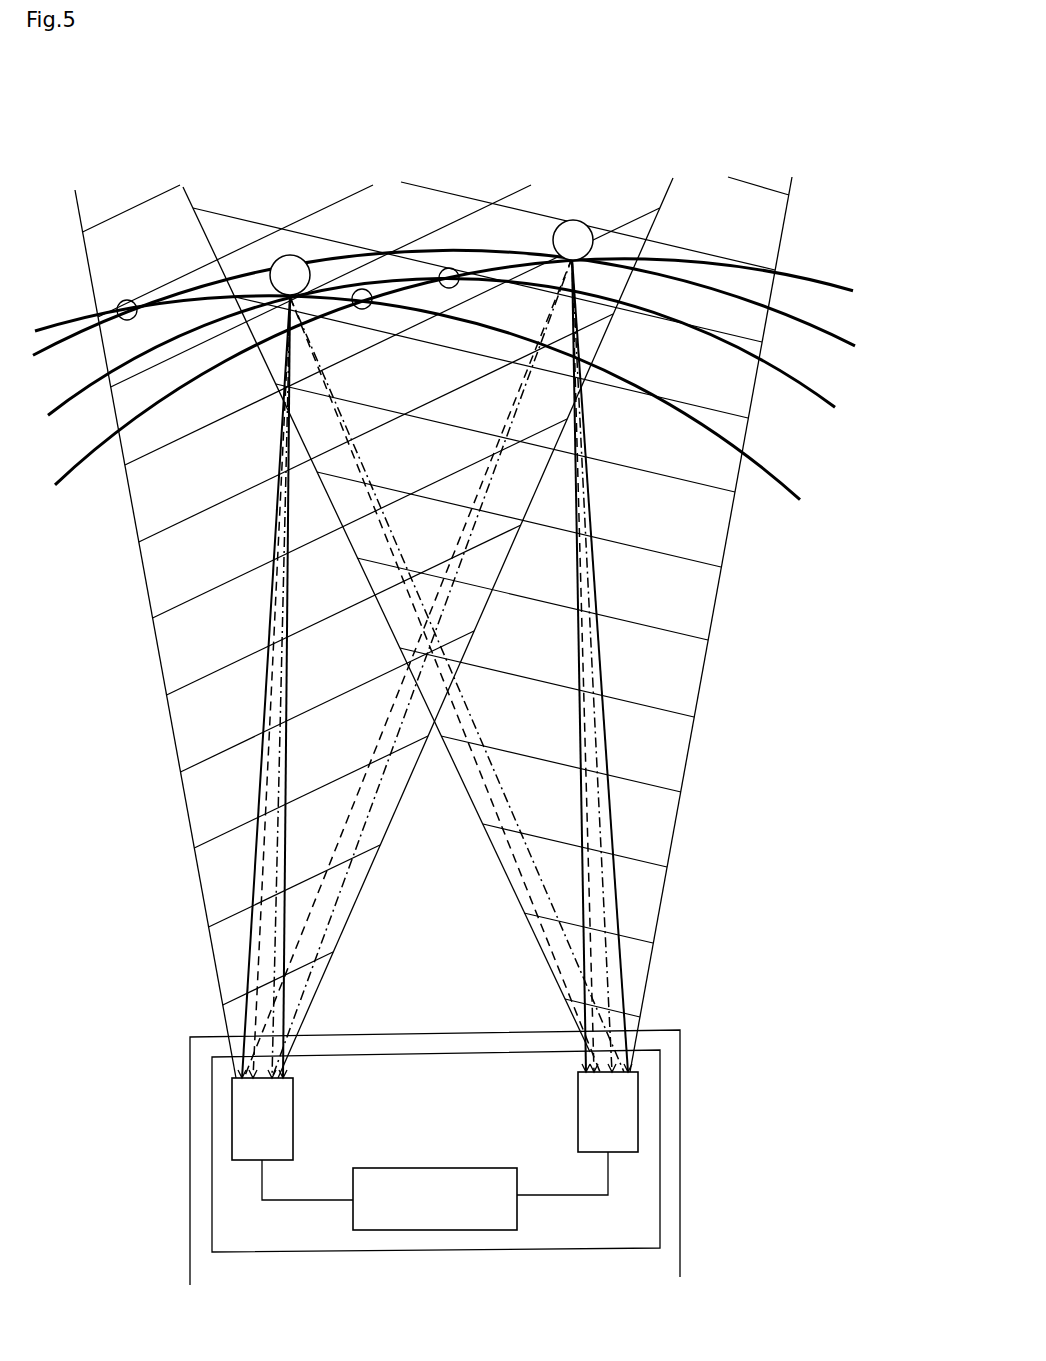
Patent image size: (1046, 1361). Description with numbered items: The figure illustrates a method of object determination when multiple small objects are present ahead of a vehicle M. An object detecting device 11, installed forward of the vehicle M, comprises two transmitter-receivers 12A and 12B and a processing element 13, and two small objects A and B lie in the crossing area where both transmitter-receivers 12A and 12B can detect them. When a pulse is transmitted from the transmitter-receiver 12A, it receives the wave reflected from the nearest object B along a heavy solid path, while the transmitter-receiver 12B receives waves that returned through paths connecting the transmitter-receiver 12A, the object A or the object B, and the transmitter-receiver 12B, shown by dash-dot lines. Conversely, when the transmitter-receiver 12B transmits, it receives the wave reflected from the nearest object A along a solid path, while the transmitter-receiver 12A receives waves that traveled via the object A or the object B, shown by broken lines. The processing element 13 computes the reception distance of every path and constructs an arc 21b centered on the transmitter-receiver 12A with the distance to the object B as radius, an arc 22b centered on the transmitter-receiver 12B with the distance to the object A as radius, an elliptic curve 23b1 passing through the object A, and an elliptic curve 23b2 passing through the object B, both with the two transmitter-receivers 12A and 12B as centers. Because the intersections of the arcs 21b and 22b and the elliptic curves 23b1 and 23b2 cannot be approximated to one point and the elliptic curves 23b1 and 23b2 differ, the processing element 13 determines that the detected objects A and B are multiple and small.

The arc 21b is at (475, 372).
The elliptic curve 23b2 is at (467, 305).
The elliptic curve 23b1 is at (466, 355).
The arc 22b is at (441, 413).
The transmitter-receiver 12B is at (293, 1118).
The transmitter-receiver 12A is at (578, 1118).
The processing element 13 is at (437, 1168).
The vehicle M is at (190, 1170).
The object detecting device 11 is at (297, 1254).
The object A is at (290, 275).
The object B is at (573, 240).